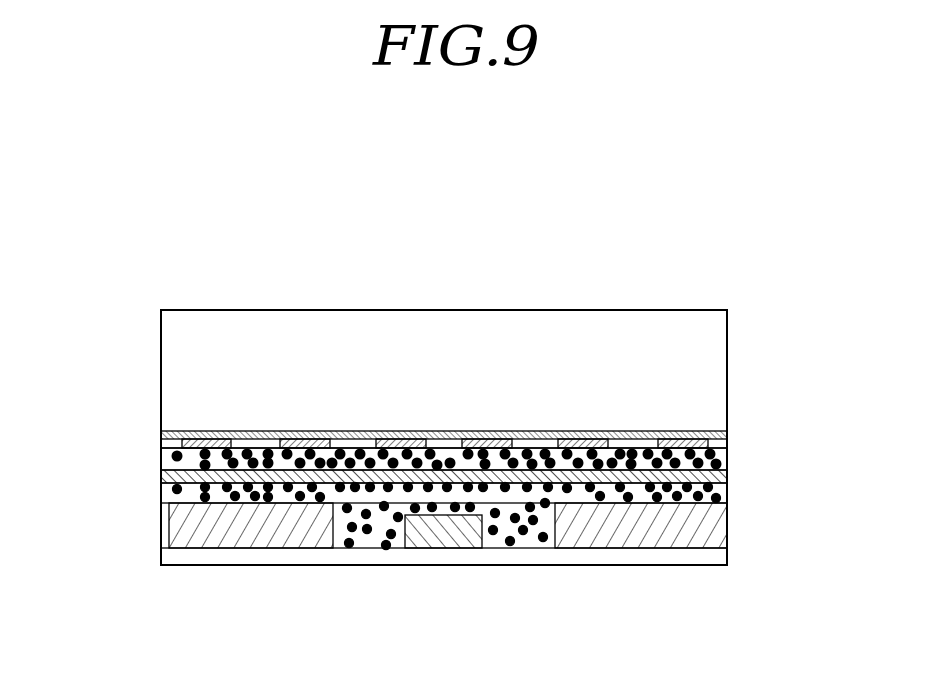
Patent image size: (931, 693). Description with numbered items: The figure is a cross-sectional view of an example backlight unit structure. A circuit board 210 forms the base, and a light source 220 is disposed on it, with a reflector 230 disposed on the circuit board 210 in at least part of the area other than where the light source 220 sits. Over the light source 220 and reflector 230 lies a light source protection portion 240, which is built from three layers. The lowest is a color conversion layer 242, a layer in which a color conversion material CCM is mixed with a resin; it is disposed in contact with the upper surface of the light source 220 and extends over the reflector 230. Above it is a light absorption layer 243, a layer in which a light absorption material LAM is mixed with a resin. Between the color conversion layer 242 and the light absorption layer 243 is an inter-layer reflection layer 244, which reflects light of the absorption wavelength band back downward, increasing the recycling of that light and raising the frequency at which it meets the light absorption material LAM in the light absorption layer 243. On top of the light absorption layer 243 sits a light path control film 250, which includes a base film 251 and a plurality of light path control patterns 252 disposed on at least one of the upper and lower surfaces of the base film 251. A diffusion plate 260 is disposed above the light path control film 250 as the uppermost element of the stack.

The circuit board 210 is at (170, 555).
The light source 220 is at (443, 537).
The reflector 230 is at (168, 523).
The light source protection portion 240 is at (513, 493).
The color conversion layer 242 is at (727, 494).
The light absorption layer 243 is at (727, 456).
The inter-layer reflection layer 244 is at (727, 475).
The light path control film 250 is at (379, 444).
The base film 251 is at (163, 435).
The light path control pattern 252 is at (196, 450).
The diffusion plate 260 is at (168, 377).
The light absorption material LAM is at (322, 465).
The color conversion material CCM is at (370, 488).